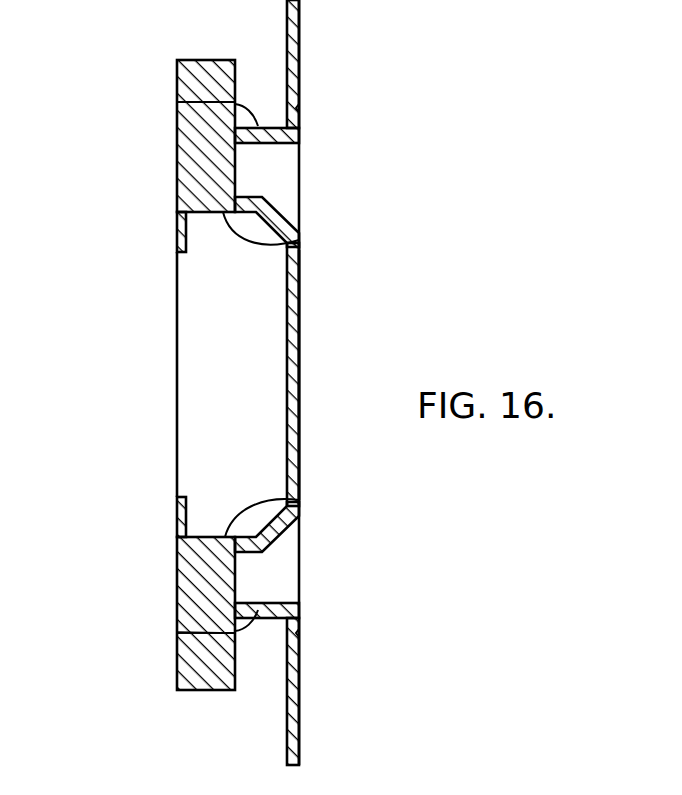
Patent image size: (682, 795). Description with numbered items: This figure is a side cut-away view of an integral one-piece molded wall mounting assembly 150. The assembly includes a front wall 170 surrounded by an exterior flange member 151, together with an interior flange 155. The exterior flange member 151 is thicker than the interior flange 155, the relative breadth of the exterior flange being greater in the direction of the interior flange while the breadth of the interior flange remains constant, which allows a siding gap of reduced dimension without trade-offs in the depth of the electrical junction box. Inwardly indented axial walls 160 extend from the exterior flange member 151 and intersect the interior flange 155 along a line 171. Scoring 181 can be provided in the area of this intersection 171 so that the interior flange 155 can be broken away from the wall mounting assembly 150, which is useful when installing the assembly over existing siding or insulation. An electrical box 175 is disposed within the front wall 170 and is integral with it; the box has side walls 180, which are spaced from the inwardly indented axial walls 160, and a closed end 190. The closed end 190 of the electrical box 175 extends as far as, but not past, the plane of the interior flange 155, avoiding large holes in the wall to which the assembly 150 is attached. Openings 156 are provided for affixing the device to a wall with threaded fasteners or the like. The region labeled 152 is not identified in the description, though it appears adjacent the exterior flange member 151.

The wall mounting assembly 150 is at (333, 287).
The exterior flange member 151 is at (177, 67).
The second body portion 152 is at (256, 101).
The interior flange 155 is at (299, 70).
The openings 156 is at (299, 17).
The inwardly indented axial walls 160 is at (177, 101).
The front wall 170 is at (177, 173).
The line of intersection 171 is at (282, 125).
The electrical box 175 is at (237, 348).
The side walls 180 is at (299, 240).
The scoring 181 is at (299, 108).
The closed end 190 is at (300, 327).